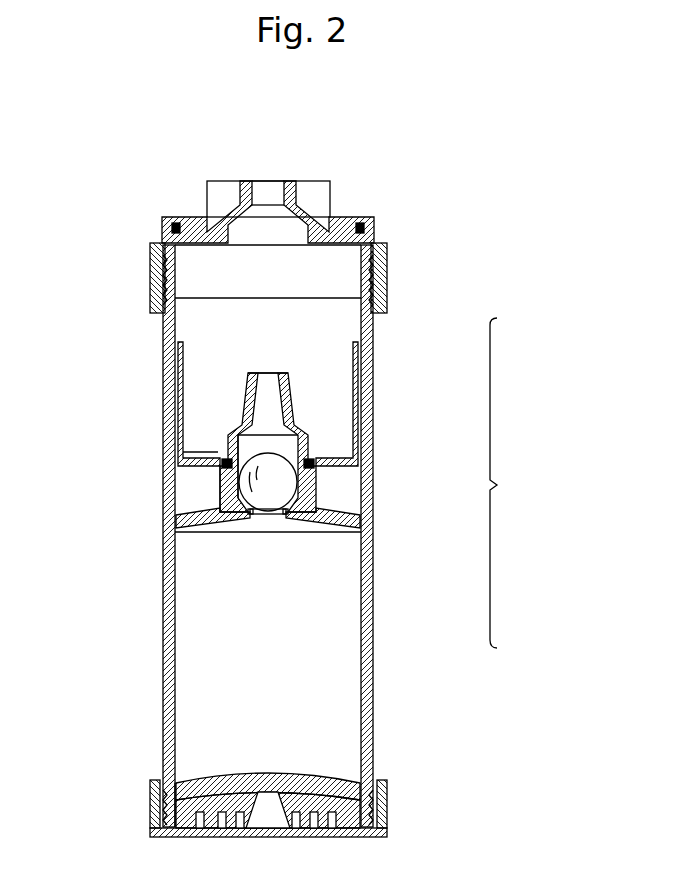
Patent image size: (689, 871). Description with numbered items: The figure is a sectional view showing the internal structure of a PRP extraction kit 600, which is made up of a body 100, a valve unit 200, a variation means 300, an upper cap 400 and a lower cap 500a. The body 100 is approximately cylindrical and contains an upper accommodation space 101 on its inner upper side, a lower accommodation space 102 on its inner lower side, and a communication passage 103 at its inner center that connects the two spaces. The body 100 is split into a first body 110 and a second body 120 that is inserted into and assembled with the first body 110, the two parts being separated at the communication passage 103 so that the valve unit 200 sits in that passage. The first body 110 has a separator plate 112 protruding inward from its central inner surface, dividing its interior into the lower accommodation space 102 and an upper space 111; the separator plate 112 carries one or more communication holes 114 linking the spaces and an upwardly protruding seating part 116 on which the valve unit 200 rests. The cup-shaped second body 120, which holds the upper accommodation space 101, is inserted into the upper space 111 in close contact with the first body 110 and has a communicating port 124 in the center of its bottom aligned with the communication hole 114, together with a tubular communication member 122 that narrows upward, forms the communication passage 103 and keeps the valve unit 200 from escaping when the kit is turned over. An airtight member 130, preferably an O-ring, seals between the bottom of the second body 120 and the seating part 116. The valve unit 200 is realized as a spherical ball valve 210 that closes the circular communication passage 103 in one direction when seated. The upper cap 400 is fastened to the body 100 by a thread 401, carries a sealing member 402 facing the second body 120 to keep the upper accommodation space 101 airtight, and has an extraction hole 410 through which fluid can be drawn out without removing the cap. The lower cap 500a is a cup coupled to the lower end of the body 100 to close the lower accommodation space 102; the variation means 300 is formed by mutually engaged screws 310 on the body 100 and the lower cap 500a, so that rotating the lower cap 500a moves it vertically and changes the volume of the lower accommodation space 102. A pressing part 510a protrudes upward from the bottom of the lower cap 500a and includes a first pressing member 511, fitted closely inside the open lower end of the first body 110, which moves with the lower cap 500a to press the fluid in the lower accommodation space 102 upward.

The body 100 is at (517, 483).
The upper accommodation space 101 is at (304, 332).
The lower accommodation space 102 is at (307, 590).
The communication passage 103 is at (274, 406).
The first body 110 is at (375, 640).
The upper space 111 is at (337, 484).
The separator plate 112 is at (322, 513).
The communication hole 114 is at (260, 515).
The seating part 116 is at (276, 514).
The second body 120 is at (358, 375).
The communication member 122 is at (292, 393).
The communicating port 124 is at (306, 440).
The airtight member 130 is at (218, 450).
The valve unit 200 is at (208, 480).
The ball valve 210 is at (222, 462).
The variation means 300 is at (392, 795).
The screws 310 is at (372, 782).
The upper cap 400 is at (392, 262).
The thread 401 is at (380, 290).
The sealing member 402 is at (380, 229).
The extraction hole 410 is at (272, 194).
The lower cap 500a is at (389, 828).
The pressing part 510a is at (185, 800).
The first pressing member 511 is at (235, 790).
The PRP extraction kit 600 is at (432, 166).